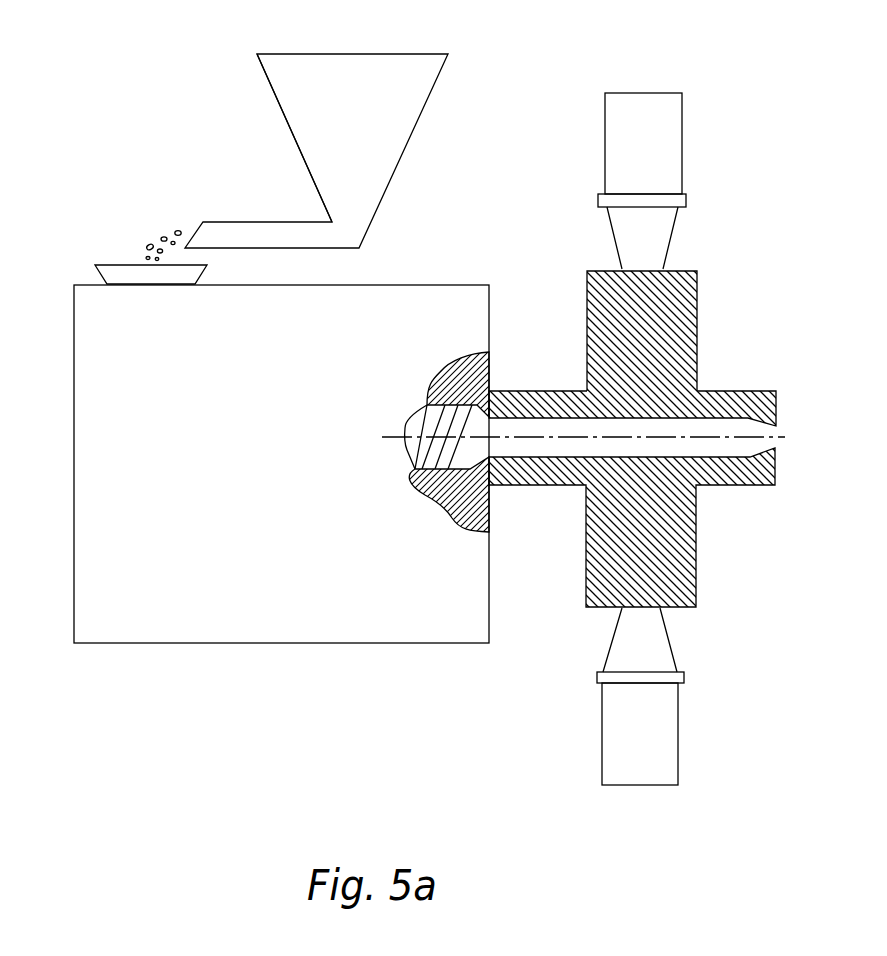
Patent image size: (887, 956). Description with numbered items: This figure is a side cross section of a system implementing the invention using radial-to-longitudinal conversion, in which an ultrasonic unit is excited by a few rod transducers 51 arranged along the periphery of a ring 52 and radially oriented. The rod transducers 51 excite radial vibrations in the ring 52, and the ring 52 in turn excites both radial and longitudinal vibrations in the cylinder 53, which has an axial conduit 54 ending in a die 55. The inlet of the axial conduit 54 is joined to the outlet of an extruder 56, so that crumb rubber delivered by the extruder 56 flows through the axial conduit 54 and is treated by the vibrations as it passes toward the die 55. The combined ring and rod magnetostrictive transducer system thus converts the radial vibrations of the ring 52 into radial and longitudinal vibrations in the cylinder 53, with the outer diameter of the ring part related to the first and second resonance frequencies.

The rod transducers 51 is at (673, 178).
The ring 52 is at (680, 325).
The cylinder 53 is at (732, 485).
The axial conduit 54 is at (708, 425).
The die 55 is at (770, 437).
The extruder 56 is at (394, 307).